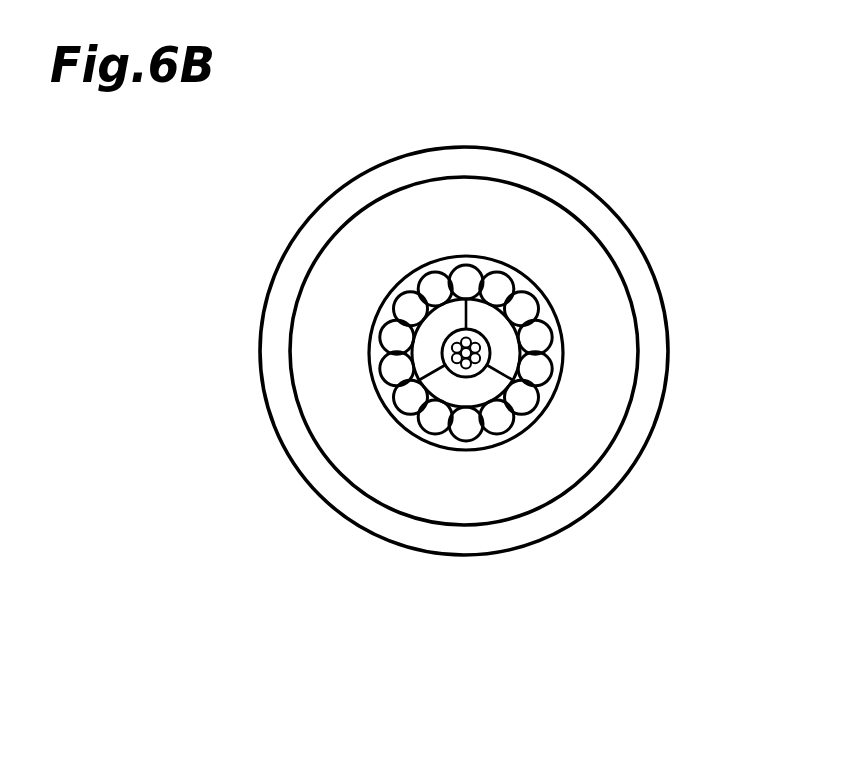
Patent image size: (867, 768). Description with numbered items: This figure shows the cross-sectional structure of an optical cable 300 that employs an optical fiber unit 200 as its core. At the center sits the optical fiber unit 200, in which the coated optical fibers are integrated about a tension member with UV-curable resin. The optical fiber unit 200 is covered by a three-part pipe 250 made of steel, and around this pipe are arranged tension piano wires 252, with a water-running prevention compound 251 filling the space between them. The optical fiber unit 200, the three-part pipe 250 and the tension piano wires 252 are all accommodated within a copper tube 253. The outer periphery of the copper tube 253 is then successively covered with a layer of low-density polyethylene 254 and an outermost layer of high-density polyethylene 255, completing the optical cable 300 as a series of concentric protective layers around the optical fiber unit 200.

The optical fiber unit 200 is at (477, 334).
The three-part pipe 250 is at (437, 330).
The water-running prevention compound 251 is at (548, 349).
The tension piano wires 252 is at (430, 422).
The copper tube 253 is at (547, 390).
The low-density polyethylene 254 is at (570, 443).
The high-density polyethylene 255 is at (583, 497).
The optical cable 300 is at (492, 585).